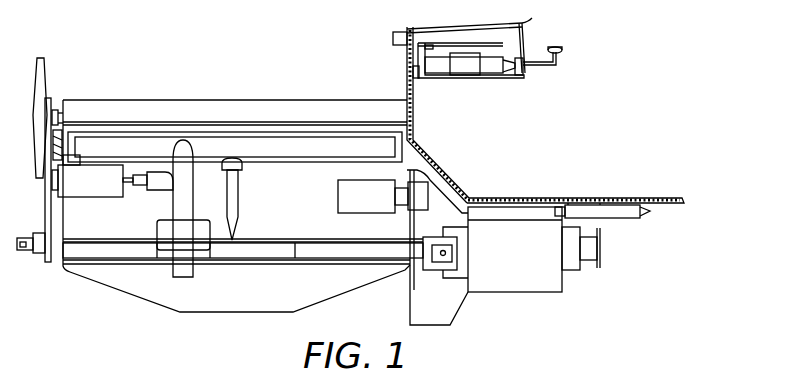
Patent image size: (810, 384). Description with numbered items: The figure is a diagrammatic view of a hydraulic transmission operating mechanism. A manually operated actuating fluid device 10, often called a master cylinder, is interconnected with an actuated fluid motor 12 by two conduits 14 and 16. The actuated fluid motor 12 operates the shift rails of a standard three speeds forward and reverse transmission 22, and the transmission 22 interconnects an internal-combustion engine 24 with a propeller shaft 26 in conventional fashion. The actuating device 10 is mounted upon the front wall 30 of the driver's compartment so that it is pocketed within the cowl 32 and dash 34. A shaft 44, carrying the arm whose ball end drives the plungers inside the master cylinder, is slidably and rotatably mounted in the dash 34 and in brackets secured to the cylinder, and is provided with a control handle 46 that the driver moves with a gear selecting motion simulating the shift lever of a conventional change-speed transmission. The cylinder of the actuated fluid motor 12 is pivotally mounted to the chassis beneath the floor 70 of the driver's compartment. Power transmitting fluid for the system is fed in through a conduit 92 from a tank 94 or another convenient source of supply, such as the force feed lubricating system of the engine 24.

The actuating fluid device 10 is at (490, 67).
The actuated fluid motor 12 is at (630, 203).
The conduit 14 is at (443, 78).
The conduit 16 is at (411, 77).
The transmission 22 is at (525, 278).
The internal-combustion engine 24 is at (250, 112).
The propeller shaft 26 is at (590, 247).
The front wall 30 is at (408, 90).
The cowl 32 is at (433, 28).
The dash 34 is at (530, 39).
The shaft 44 is at (547, 66).
The control handle 46 is at (563, 50).
The floor 70 is at (680, 200).
The conduit 92 is at (452, 44).
The tank 94 is at (393, 34).